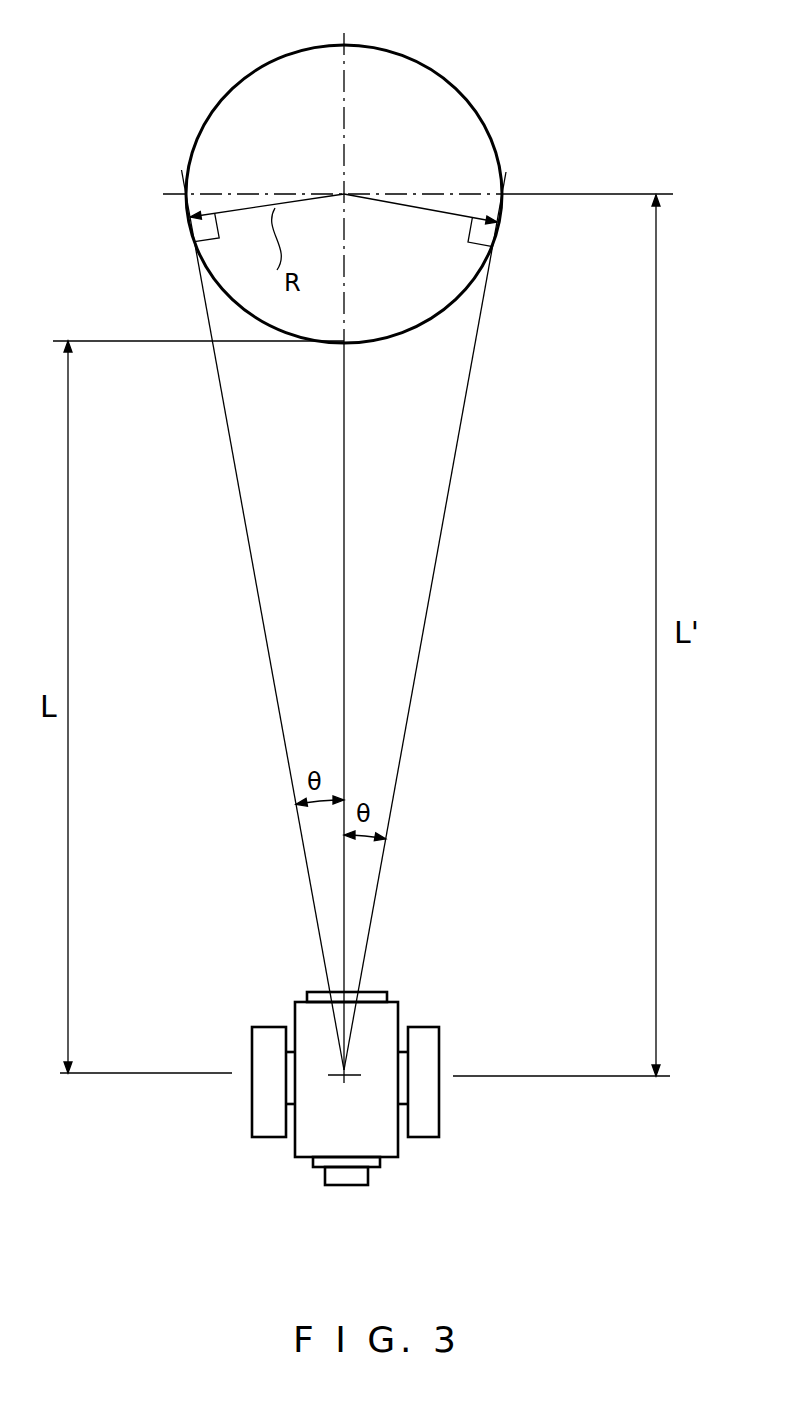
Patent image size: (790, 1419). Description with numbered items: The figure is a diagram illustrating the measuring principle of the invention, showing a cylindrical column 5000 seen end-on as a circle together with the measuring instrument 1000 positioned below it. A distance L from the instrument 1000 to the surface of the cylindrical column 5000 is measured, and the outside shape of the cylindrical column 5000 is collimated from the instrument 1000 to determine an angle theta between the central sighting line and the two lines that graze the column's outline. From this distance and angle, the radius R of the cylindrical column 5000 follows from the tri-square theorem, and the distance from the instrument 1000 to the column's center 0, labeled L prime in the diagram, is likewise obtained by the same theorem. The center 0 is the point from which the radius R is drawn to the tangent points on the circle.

The center of circular object 0 is at (345, 194).
The cylindrical column 5000 is at (467, 147).
The vehicle 1000 is at (380, 1138).